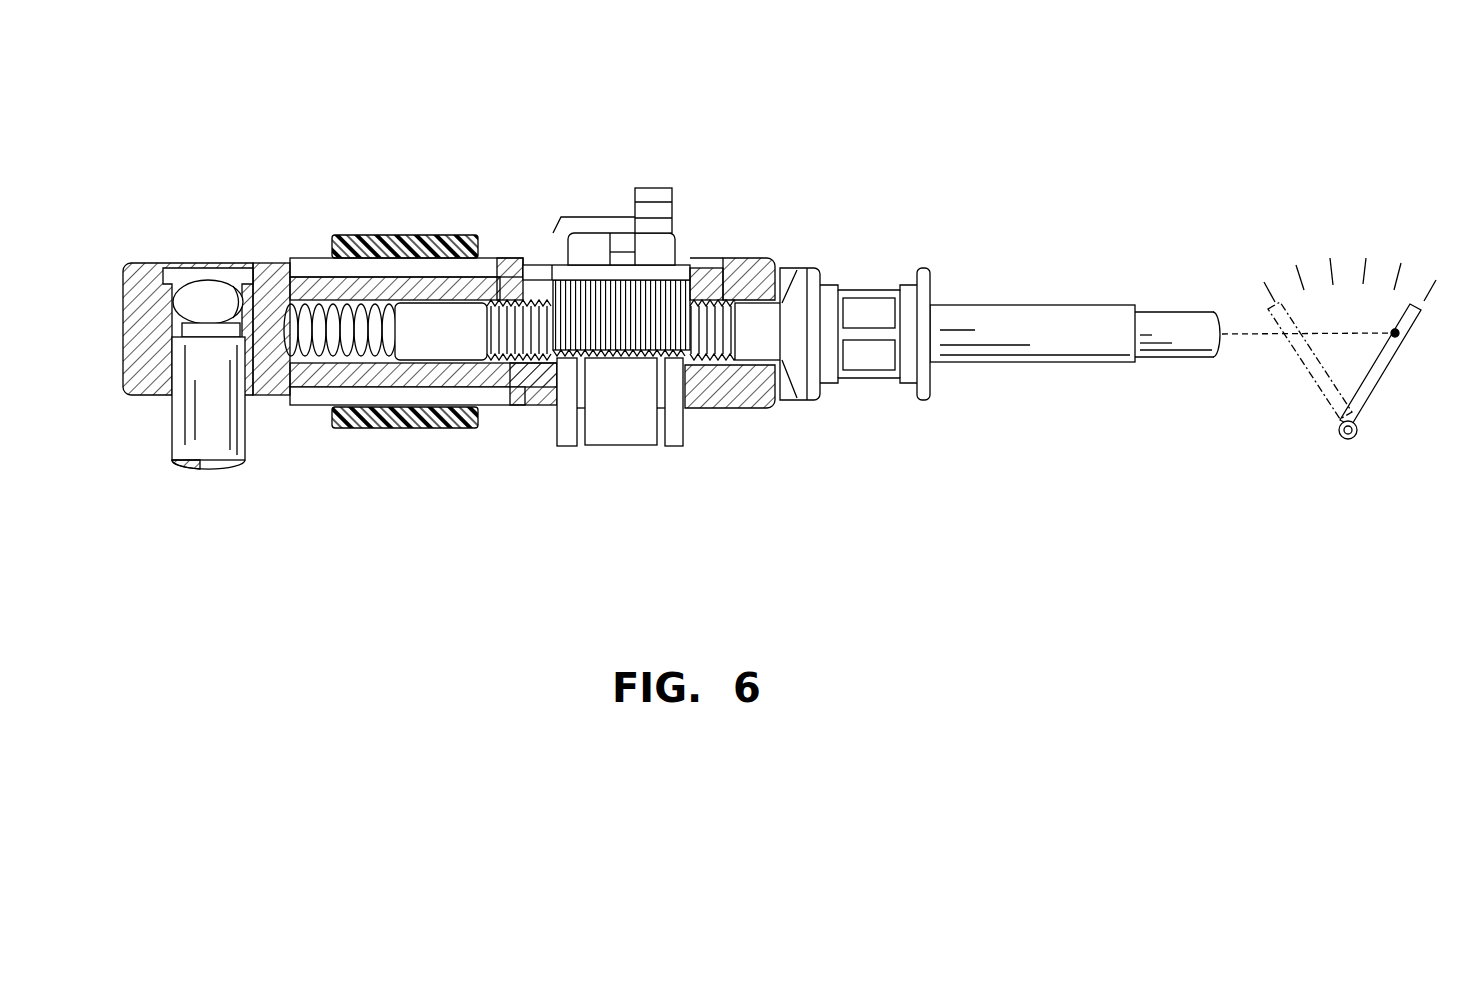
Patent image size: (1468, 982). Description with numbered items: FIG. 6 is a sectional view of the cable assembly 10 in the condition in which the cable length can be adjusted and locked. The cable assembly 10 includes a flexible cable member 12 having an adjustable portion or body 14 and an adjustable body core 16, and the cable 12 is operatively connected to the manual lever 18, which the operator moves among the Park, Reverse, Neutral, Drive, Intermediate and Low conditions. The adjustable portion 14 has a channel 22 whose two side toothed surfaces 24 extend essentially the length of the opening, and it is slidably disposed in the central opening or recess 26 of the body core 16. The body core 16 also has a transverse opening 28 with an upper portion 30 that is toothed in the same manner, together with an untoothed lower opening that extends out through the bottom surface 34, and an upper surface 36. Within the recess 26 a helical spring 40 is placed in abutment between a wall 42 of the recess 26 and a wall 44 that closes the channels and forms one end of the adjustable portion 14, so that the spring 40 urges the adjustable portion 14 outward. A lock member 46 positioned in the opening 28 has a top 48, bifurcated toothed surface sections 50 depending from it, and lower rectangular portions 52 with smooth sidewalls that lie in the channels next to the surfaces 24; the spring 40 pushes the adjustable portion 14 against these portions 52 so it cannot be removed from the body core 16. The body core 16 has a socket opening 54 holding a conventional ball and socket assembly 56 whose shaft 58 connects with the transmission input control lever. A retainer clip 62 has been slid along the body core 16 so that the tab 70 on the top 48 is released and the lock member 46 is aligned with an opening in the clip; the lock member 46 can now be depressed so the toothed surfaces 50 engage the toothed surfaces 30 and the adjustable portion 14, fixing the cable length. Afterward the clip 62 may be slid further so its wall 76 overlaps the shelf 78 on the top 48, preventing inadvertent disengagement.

The cable assembly 10 is at (396, 149).
The flexible cable member 12 is at (1260, 336).
The adjustable portion or body 14 is at (747, 337).
The adjustable body core 16 is at (772, 409).
The manual lever 18 is at (1367, 393).
The channel 22 is at (518, 300).
The side toothed surfaces 24 is at (522, 345).
The central opening or recess 26 is at (428, 352).
The transverse opening 28 is at (565, 383).
The upper toothed portion 30 is at (520, 265).
The bottom surface 34 is at (695, 407).
The upper surface 36 is at (740, 262).
The helical spring 40 is at (296, 368).
The wall of the recess 42 is at (297, 330).
The wall 44 is at (397, 337).
The lock member 46 is at (673, 241).
The top 48 is at (623, 233).
The bifurcated toothed surface sections 50 is at (661, 298).
The lower rectangular portions 52 is at (648, 420).
The socket opening 54 is at (176, 302).
The ball and socket assembly 56 is at (181, 471).
The shaft 58 is at (226, 462).
The retainer clip 62 is at (376, 431).
The tab 70 is at (608, 256).
The wall 76 is at (423, 244).
The shelf 78 is at (548, 268).